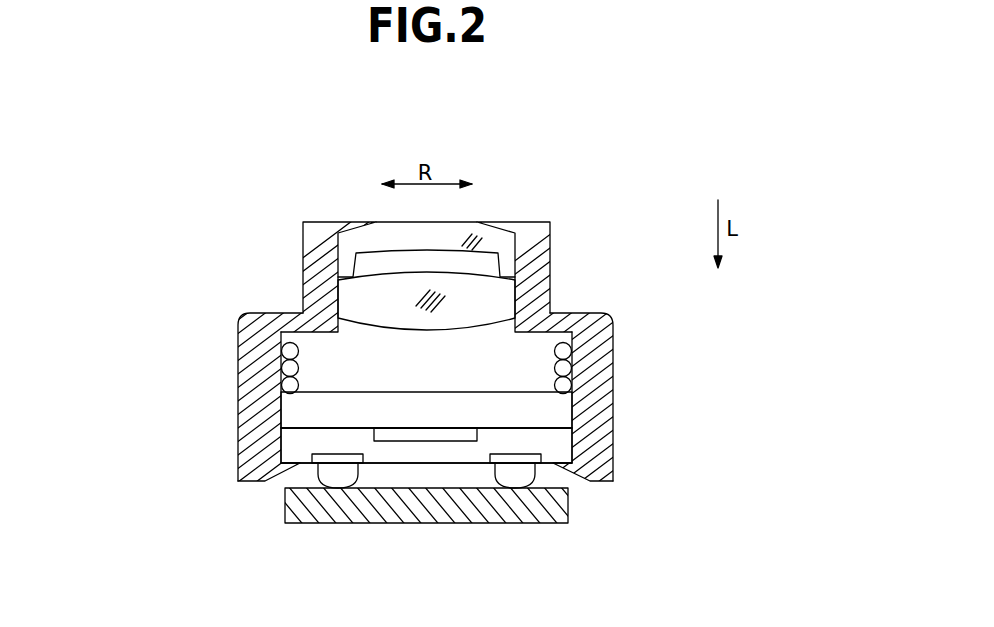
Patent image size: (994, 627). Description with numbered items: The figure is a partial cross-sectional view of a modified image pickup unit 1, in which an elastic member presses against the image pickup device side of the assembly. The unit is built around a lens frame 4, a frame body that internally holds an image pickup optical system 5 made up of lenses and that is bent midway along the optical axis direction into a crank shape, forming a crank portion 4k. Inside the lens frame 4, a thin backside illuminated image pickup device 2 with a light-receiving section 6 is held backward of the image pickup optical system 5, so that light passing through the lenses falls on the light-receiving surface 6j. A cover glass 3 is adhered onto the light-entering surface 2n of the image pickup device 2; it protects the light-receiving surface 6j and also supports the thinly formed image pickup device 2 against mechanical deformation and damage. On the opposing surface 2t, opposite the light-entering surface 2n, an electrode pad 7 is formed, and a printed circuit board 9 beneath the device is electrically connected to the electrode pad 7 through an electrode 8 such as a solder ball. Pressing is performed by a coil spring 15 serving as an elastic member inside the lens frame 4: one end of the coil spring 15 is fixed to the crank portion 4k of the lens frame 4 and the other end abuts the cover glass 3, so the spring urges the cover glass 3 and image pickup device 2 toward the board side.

The image pickup unit 1 is at (644, 188).
The image pickup device 2 is at (300, 447).
The light-entering surface 2n is at (333, 414).
The opposing surface 2t is at (442, 476).
The cover glass 3 is at (300, 413).
The lens frame 4 is at (537, 242).
The crank portion 4k is at (320, 320).
The image pickup optical system 5 is at (487, 300).
The light-receiving section 6 is at (408, 435).
The light-receiving surface 6j is at (387, 414).
The electrode pad 7 is at (315, 458).
The electrode 8 is at (335, 475).
The printed circuit board 9 is at (335, 510).
The coil spring 15 is at (283, 376).